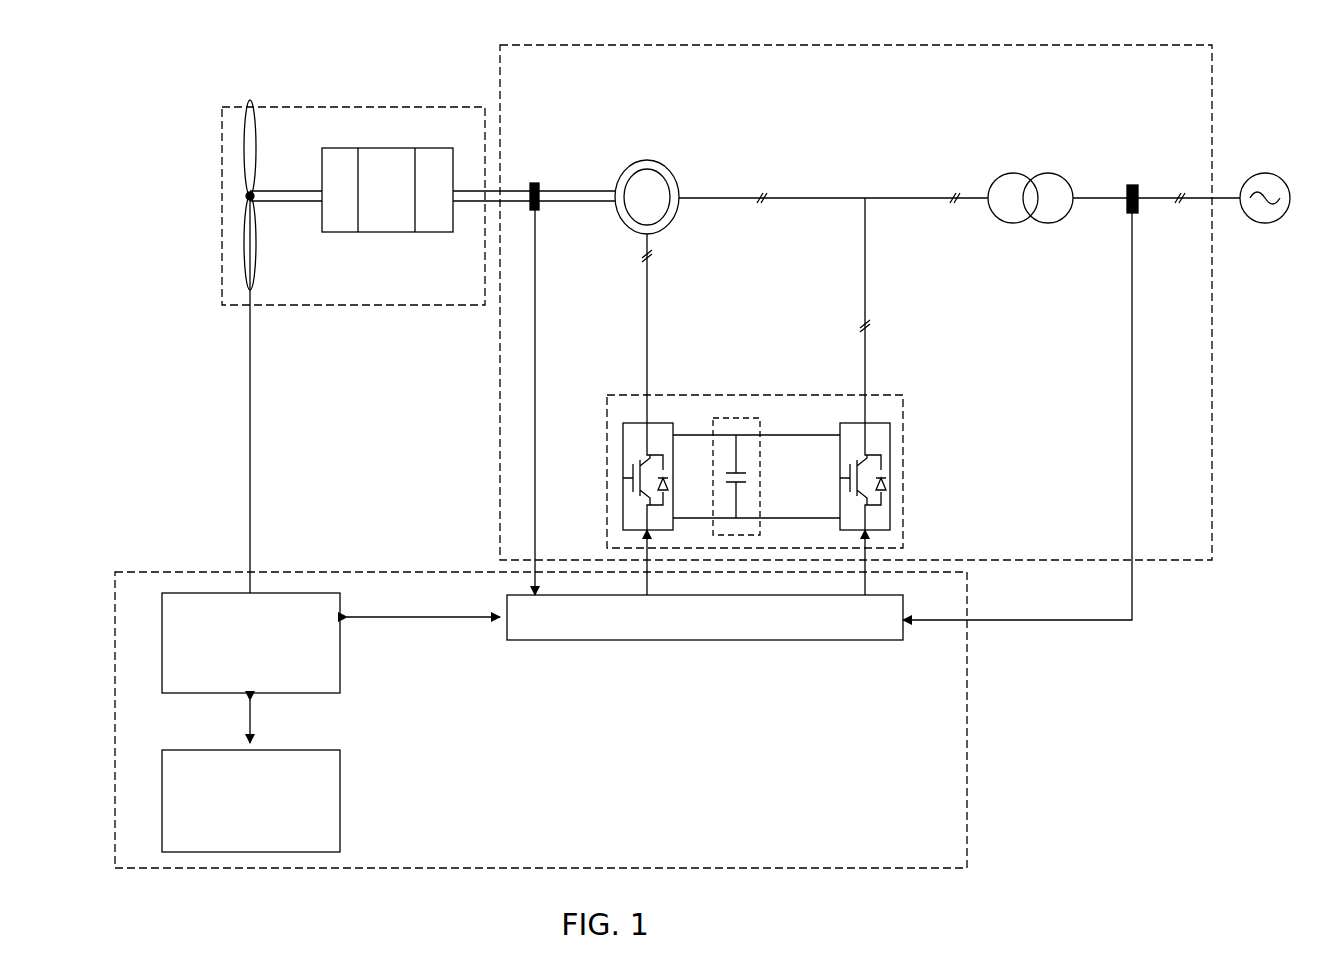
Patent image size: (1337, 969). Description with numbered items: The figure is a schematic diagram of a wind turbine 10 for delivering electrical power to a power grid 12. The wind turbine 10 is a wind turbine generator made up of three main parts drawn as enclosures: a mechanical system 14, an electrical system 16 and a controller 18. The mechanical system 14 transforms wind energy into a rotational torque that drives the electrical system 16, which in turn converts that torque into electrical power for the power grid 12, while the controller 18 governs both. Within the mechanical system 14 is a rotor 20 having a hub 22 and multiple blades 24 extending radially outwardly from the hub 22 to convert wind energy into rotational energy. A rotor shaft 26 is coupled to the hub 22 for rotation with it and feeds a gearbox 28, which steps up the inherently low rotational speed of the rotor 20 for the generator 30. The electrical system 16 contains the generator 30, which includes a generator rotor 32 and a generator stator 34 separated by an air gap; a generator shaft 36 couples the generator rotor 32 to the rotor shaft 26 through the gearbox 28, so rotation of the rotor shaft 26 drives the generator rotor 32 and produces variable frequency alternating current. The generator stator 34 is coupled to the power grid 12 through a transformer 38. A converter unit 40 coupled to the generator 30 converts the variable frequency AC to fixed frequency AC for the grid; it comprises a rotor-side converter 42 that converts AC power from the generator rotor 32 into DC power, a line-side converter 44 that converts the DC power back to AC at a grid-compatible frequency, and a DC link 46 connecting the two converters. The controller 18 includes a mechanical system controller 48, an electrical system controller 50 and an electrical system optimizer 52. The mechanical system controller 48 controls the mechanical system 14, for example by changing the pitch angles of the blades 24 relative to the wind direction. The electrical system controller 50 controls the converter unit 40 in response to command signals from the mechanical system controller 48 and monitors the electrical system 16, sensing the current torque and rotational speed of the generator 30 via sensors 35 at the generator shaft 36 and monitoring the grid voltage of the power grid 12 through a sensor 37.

The wind turbine 10 is at (200, 90).
The power grid 12 is at (1262, 175).
The mechanical system 14 is at (355, 107).
The electrical system 16 is at (1213, 350).
The controller 18 is at (968, 705).
The rotor 20 is at (253, 105).
The hub 22 is at (255, 200).
The blades 24 is at (245, 155).
The rotor shaft 26 is at (280, 192).
The gearbox 28 is at (388, 148).
The generator 30 is at (660, 154).
The generator rotor 32 is at (640, 205).
The generator stator 34 is at (680, 180).
The sensors 35 is at (537, 184).
The generator shaft 36 is at (582, 190).
The sensor 37 is at (1135, 184).
The transformer 38 is at (1030, 175).
The converter unit 40 is at (756, 449).
The rotor-side converter 42 is at (623, 463).
The line-side converter 44 is at (890, 480).
The DC link 46 is at (738, 418).
The mechanical system controller 48 is at (340, 643).
The electrical system controller 50 is at (705, 640).
The electrical system optimizer 52 is at (340, 800).